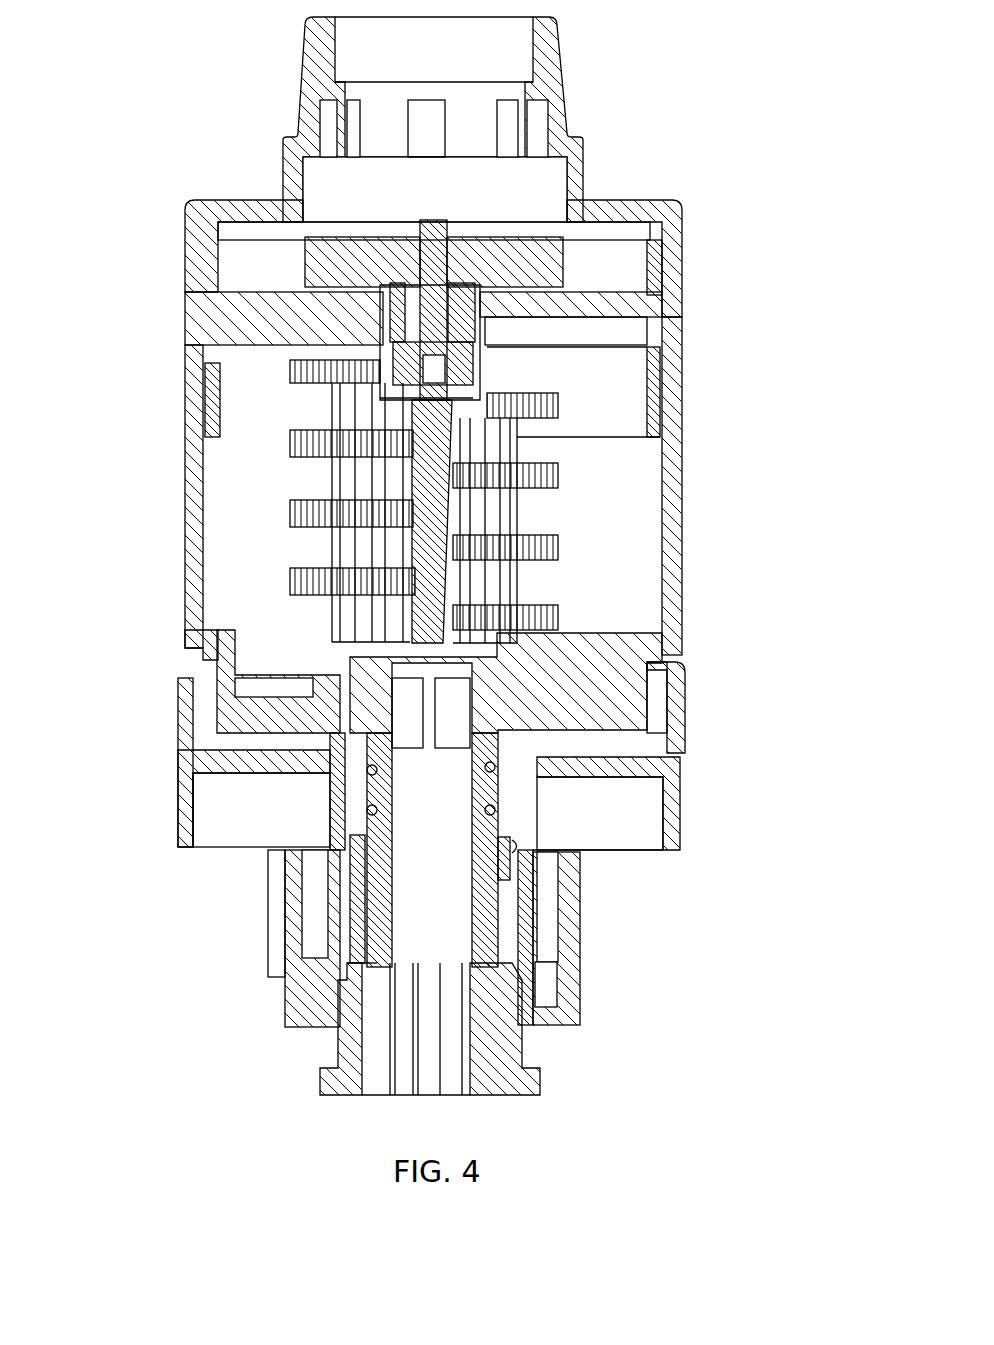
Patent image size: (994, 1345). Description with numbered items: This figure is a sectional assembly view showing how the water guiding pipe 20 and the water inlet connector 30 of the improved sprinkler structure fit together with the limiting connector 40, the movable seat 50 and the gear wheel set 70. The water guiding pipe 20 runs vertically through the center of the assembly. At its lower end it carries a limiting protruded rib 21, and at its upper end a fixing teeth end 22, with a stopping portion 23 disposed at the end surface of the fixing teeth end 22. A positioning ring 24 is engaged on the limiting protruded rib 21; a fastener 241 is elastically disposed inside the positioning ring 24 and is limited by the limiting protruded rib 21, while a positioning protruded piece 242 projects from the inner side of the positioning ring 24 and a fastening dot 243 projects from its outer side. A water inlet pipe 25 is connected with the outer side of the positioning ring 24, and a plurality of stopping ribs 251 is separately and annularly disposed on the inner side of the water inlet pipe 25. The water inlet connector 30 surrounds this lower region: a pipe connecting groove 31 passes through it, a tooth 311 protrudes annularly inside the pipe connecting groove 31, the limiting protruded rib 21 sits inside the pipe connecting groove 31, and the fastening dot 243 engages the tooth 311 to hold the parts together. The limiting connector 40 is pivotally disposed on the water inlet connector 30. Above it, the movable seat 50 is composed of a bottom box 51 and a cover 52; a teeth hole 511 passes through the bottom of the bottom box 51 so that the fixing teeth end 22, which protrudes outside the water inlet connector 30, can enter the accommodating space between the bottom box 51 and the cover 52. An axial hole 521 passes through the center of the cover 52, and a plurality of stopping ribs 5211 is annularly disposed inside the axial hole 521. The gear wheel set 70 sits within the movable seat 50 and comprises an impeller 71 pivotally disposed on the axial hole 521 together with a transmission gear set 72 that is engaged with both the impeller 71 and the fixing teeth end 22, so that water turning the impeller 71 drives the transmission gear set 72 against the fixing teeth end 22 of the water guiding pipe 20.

The water guiding pipe 20 is at (555, 660).
The limiting protruded rib 21 is at (495, 967).
The fixing teeth end 22 is at (345, 675).
The stopping portion 23 is at (340, 630).
The positioning ring 24 is at (352, 905).
The fastener 241 is at (362, 968).
The positioning protruded piece 242 is at (510, 867).
The fastening dot 243 is at (518, 847).
The water inlet pipe 25 is at (518, 1100).
The stopping ribs 251 is at (415, 1100).
The water inlet connector 30 is at (583, 982).
The pipe connecting groove 31 is at (357, 815).
The tooth 311 is at (355, 878).
The limiting connector 40 is at (688, 755).
The movable seat 50 is at (683, 440).
The bottom box 51 is at (680, 600).
The teeth hole 511 is at (650, 713).
The cover 52 is at (197, 330).
The axial hole 521 is at (470, 322).
The stopping ribs 5211 is at (470, 287).
The gear wheel set 70 is at (605, 432).
The impeller 71 is at (300, 267).
The transmission gear set 72 is at (290, 453).